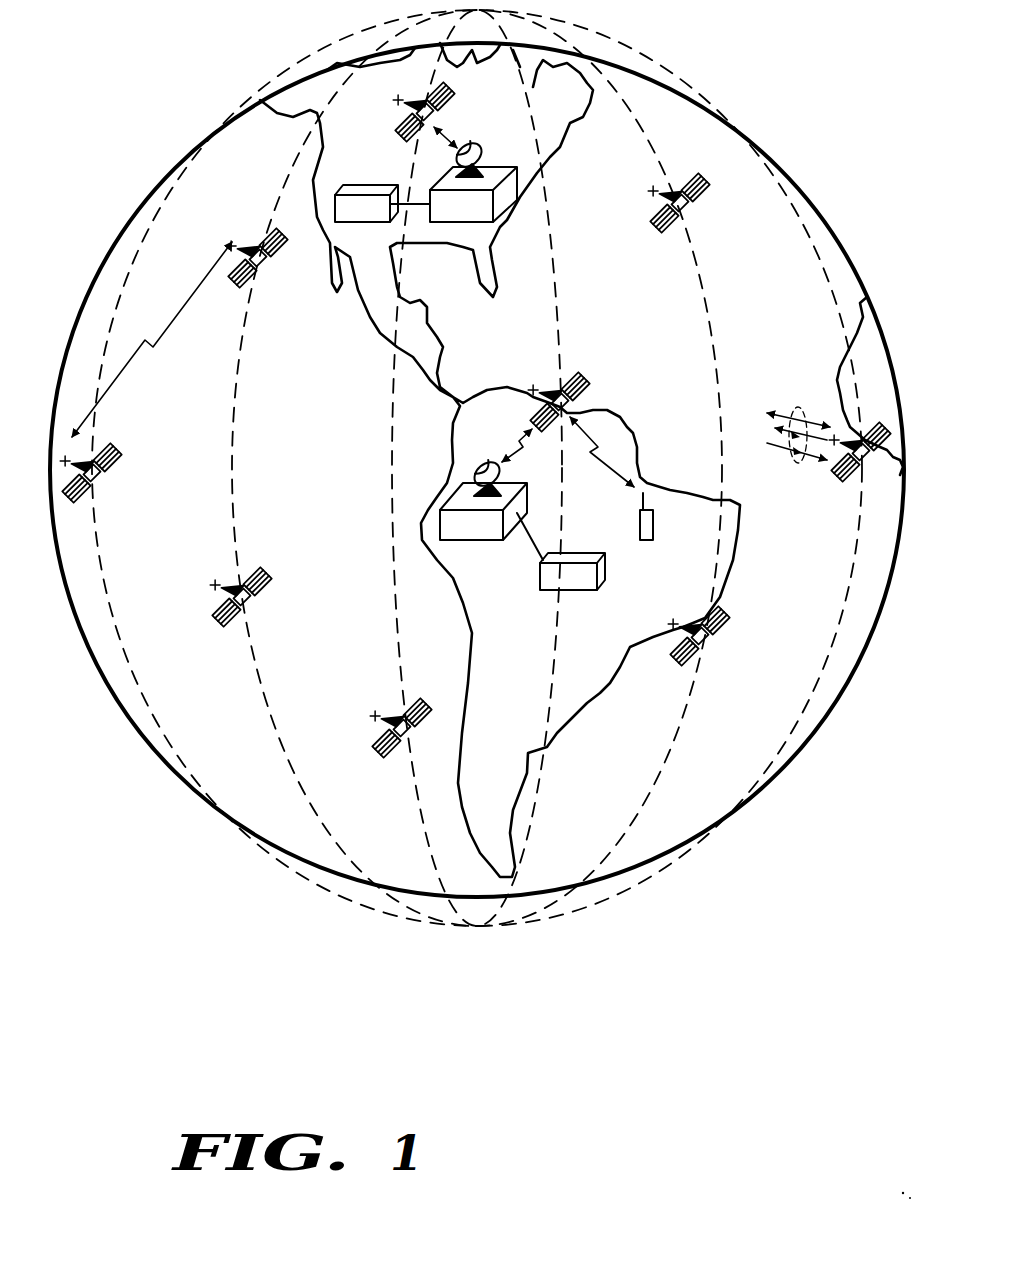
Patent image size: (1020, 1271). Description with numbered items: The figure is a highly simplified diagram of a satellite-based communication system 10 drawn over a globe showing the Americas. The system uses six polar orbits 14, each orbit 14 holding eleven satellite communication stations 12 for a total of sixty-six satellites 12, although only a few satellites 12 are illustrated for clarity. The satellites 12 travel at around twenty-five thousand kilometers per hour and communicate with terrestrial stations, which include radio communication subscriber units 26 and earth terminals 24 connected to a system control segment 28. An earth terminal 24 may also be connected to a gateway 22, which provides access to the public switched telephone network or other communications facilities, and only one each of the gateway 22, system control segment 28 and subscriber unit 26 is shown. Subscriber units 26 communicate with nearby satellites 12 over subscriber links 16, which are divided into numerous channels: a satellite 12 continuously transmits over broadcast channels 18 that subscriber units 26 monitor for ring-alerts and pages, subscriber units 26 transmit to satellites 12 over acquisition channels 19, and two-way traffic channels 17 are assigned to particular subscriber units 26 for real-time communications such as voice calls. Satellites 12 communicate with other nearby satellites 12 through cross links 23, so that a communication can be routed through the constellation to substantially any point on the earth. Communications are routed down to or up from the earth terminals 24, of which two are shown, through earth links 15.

The satellite-based communication system 10 is at (473, 1030).
The satellite communication station 12 is at (403, 140).
The polar orbit 14 is at (294, 181).
The earth link 15 is at (517, 439).
The subscriber link 16 is at (600, 430).
The traffic channel 17 is at (785, 410).
The broadcast channel 18 is at (775, 432).
The acquisition channel 19 is at (783, 458).
The gateway 22 is at (580, 593).
The cross link 23 is at (163, 337).
The earth terminal 24 is at (496, 165).
The subscriber unit 26 is at (647, 543).
The system control segment 28 is at (350, 226).